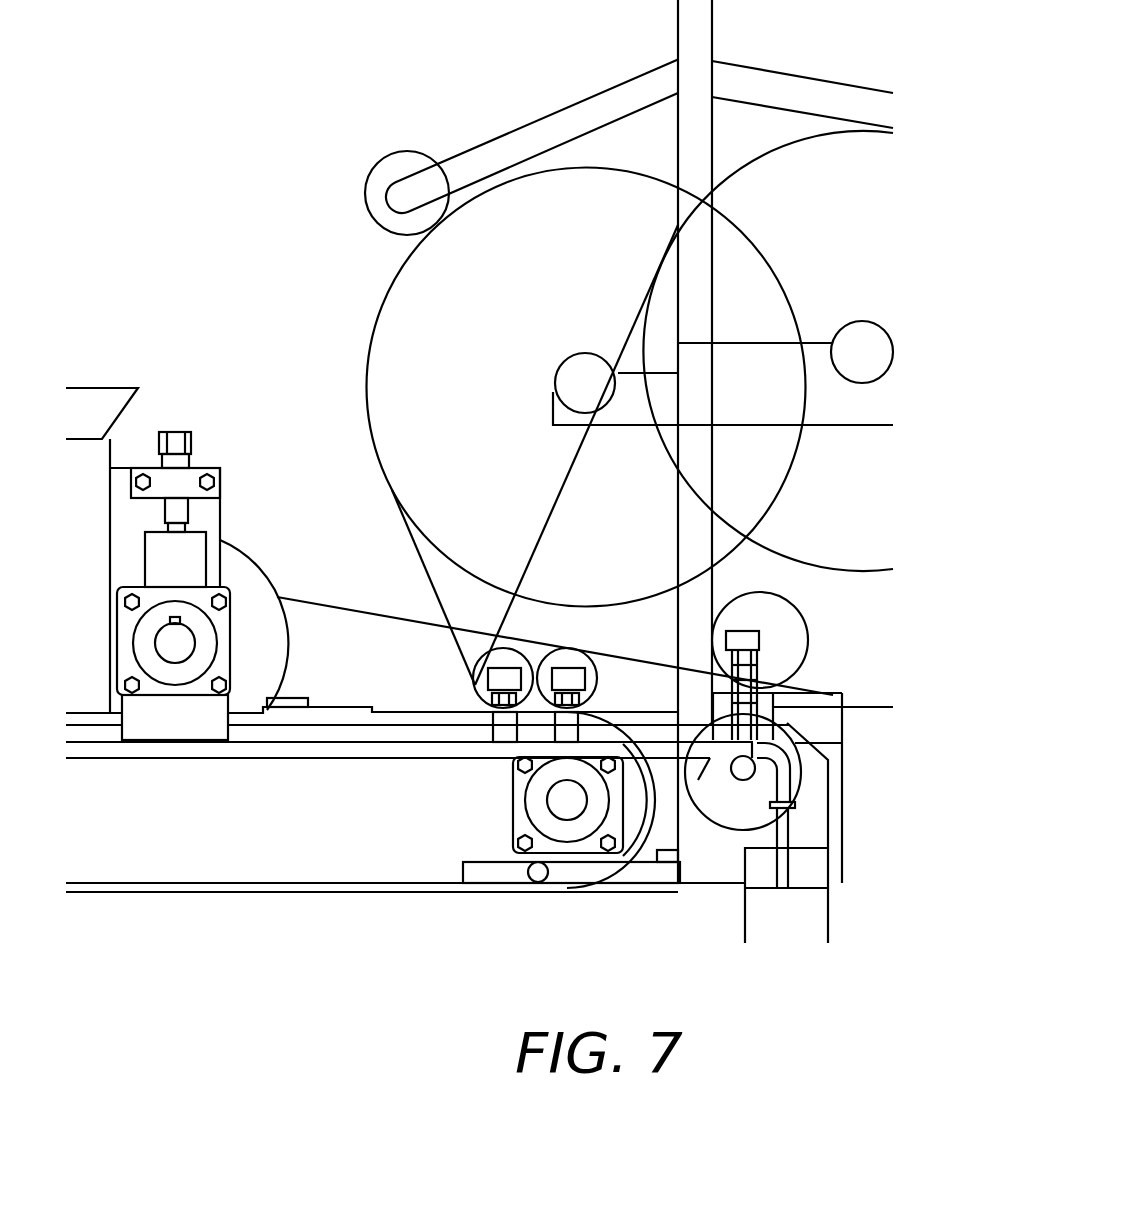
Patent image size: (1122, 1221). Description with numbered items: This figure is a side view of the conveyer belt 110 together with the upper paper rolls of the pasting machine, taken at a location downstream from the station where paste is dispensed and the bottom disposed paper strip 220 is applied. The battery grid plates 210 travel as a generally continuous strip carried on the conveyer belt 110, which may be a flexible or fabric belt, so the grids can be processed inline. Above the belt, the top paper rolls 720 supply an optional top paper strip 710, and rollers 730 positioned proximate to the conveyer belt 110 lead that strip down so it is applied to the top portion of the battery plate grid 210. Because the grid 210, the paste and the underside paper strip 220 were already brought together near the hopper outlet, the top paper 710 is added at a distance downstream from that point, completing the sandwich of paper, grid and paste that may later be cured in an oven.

The conveyer belt 110 is at (452, 717).
The battery grid plates 210 is at (313, 717).
The bottom disposed paper strip 220 is at (365, 717).
The top paper strip 710 is at (457, 653).
The top paper rolls 720 is at (400, 385).
The rollers 730 is at (503, 705).